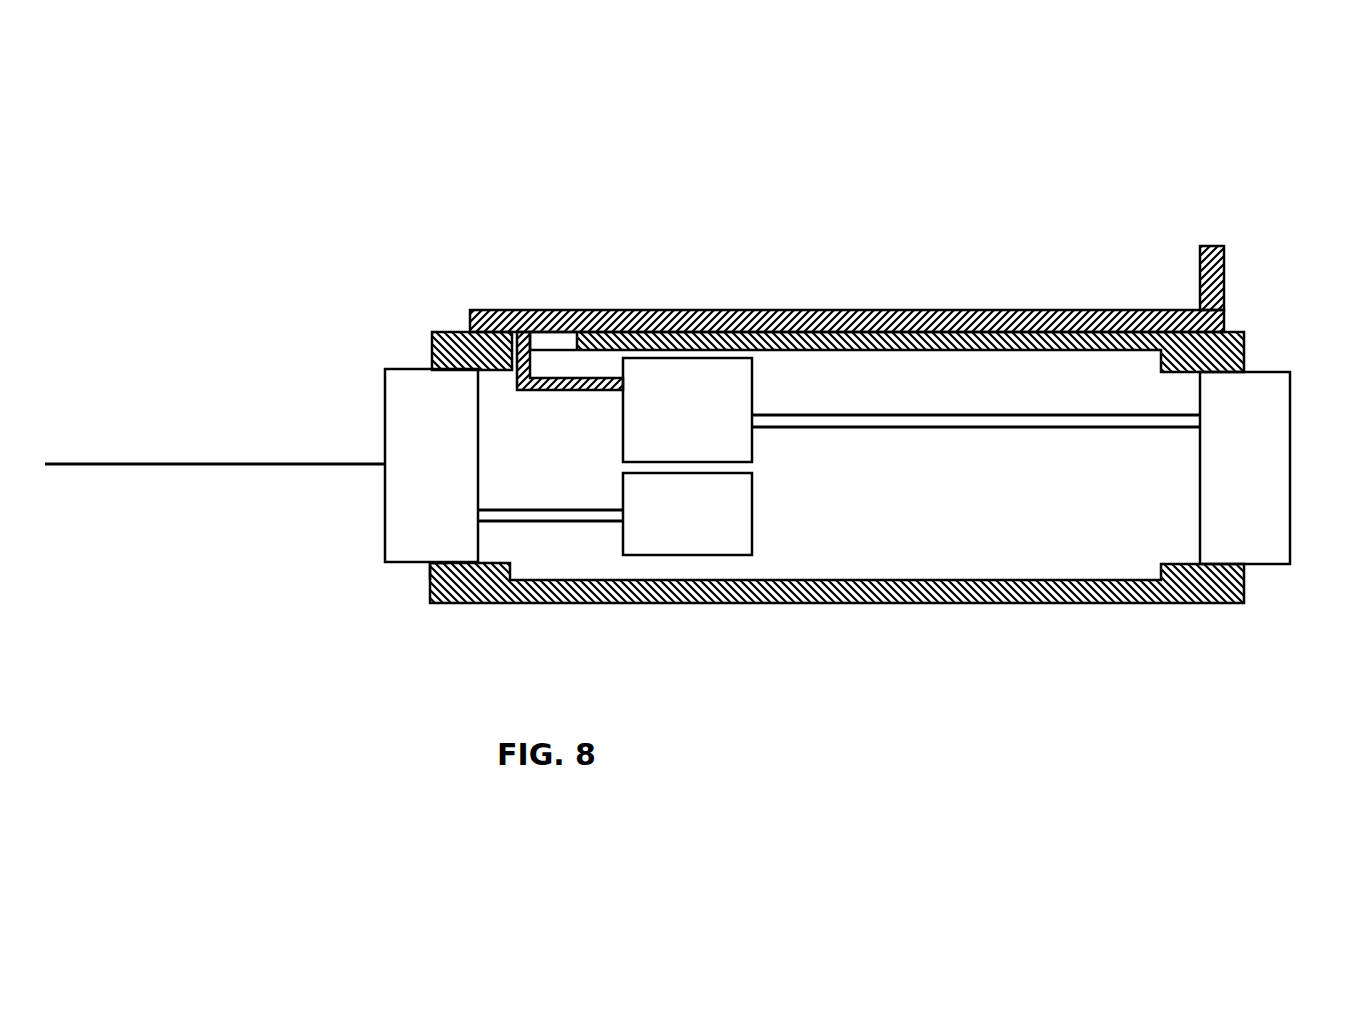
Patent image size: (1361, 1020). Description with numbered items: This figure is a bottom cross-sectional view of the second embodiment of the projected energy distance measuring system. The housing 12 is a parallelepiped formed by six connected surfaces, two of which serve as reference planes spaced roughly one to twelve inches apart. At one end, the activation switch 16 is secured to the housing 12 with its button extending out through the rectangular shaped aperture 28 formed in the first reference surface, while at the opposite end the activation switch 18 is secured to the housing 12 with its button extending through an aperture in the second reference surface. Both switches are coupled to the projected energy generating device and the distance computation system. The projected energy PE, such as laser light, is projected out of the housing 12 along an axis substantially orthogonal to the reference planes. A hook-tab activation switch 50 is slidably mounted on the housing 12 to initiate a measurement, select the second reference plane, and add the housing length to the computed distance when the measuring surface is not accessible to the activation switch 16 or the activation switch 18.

The hook-tab activation switch 50 is at (1223, 272).
The activation switch 16 is at (385, 538).
The activation switch 18 is at (1275, 470).
The housing 12 is at (1244, 584).
The rectangular shaped aperture 28 is at (430, 565).
The projected energy PE is at (138, 466).